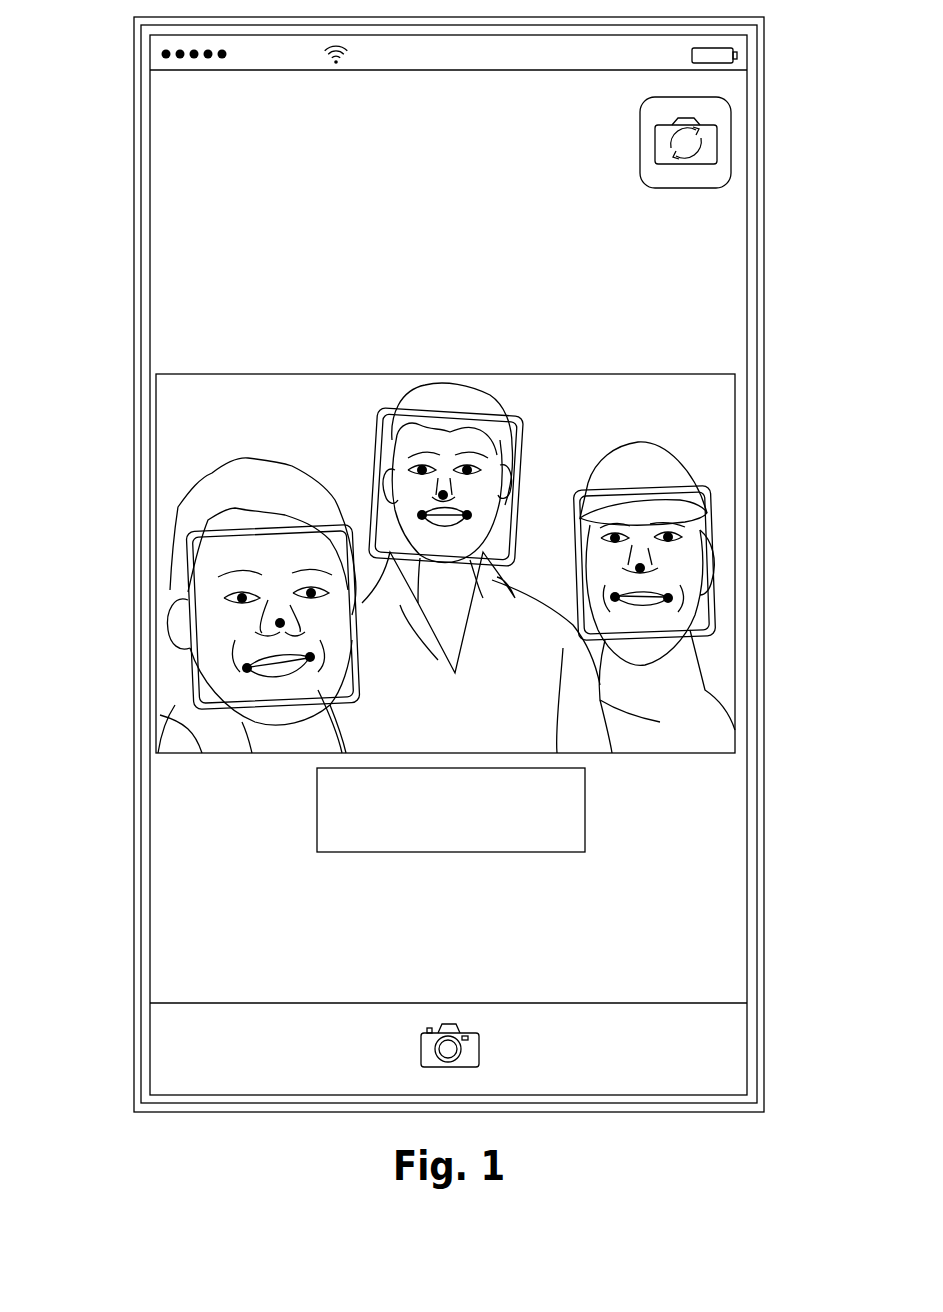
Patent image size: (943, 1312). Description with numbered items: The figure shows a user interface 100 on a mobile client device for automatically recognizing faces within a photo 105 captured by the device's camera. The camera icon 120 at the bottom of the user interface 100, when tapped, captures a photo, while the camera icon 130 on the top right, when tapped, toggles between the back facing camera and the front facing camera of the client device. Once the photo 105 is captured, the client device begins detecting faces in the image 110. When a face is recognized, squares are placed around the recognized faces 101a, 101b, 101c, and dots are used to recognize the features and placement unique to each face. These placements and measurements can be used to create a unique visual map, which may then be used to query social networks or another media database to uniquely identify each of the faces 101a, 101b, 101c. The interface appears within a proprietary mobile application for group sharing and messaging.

The user interface 100 is at (134, 300).
The photo 105 is at (737, 692).
The face 101a is at (292, 527).
The face 101b is at (395, 412).
The face 101c is at (598, 492).
The image 110 is at (503, 838).
The camera icon 120 is at (480, 1045).
The camera icon 130 is at (720, 137).